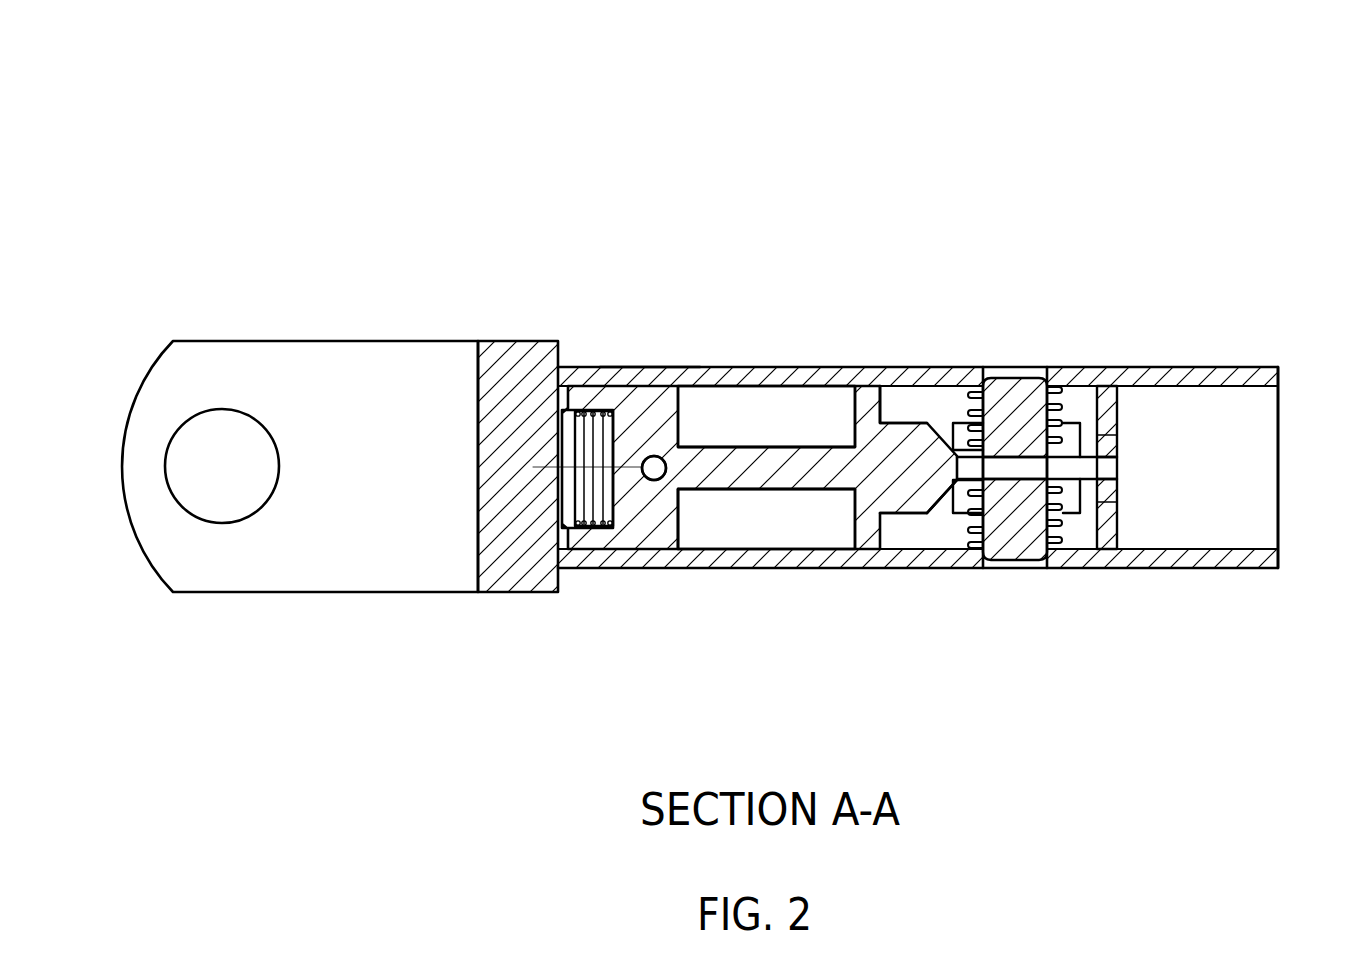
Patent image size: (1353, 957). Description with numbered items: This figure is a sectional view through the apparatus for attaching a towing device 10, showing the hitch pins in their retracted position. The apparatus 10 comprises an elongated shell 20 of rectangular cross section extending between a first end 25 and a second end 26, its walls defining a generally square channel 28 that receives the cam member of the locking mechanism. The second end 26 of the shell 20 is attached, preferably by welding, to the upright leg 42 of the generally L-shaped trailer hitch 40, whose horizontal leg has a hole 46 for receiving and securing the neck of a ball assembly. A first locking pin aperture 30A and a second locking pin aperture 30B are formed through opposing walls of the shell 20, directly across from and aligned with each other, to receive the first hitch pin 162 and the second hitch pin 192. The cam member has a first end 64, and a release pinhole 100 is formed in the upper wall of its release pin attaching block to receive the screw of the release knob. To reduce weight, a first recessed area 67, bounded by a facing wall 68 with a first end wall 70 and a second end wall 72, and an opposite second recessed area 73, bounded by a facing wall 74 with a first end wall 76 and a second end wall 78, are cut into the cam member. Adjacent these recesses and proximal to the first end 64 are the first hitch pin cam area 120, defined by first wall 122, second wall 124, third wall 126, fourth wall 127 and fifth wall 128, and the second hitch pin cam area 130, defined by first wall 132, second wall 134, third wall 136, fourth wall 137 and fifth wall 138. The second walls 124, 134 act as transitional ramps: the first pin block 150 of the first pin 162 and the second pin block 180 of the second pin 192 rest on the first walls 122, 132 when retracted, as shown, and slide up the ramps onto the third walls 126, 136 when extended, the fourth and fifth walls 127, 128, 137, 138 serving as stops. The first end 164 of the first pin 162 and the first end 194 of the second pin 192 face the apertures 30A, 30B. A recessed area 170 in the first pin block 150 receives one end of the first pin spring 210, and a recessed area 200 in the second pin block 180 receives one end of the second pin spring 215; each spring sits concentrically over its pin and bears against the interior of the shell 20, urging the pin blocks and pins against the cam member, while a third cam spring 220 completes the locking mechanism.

The apparatus for attaching a towing device 10 is at (405, 686).
The shell 20 is at (654, 348).
The first end 25 is at (1280, 370).
The second end 26 is at (560, 583).
The channel 28 is at (1218, 488).
The first locking pin aperture 30A is at (1003, 380).
The second locking pin aperture 30B is at (1008, 560).
The trailer hitch 40 is at (265, 609).
The upright leg 42 is at (513, 609).
The hole 46 is at (223, 410).
The first end 64 is at (1212, 368).
The first recessed area 67 is at (738, 447).
The facing wall 68 is at (778, 405).
The first end wall 70 is at (853, 428).
The second end wall 72 is at (681, 448).
The second recessed area 73 is at (763, 530).
The facing wall 74 is at (746, 489).
The first end wall 76 is at (855, 522).
The second end wall 78 is at (685, 549).
The release pinhole 100 is at (650, 457).
The first hitch pin cam area 120 is at (919, 382).
The first wall 122 is at (993, 380).
The second wall 124 is at (935, 424).
The third wall 126 is at (898, 422).
The fourth wall 127 is at (886, 388).
The fifth wall 128 is at (1112, 415).
The second hitch pin cam area 130 is at (929, 546).
The first wall 132 is at (988, 552).
The second wall 134 is at (975, 549).
The third wall 136 is at (890, 565).
The fourth wall 137 is at (883, 545).
The fifth wall 138 is at (1100, 553).
The first pin block 150 is at (1088, 406).
The first hitch pin 162 is at (1048, 388).
The first end 164 is at (1032, 393).
The recessed area 170 is at (1085, 405).
The second pin block 180 is at (1094, 500).
The second hitch pin 192 is at (1047, 560).
The first end 194 is at (1028, 560).
The recessed area 200 is at (1118, 548).
The first pin spring 210 is at (1068, 395).
The second pin spring 215 is at (1066, 545).
The third cam spring 220 is at (578, 527).